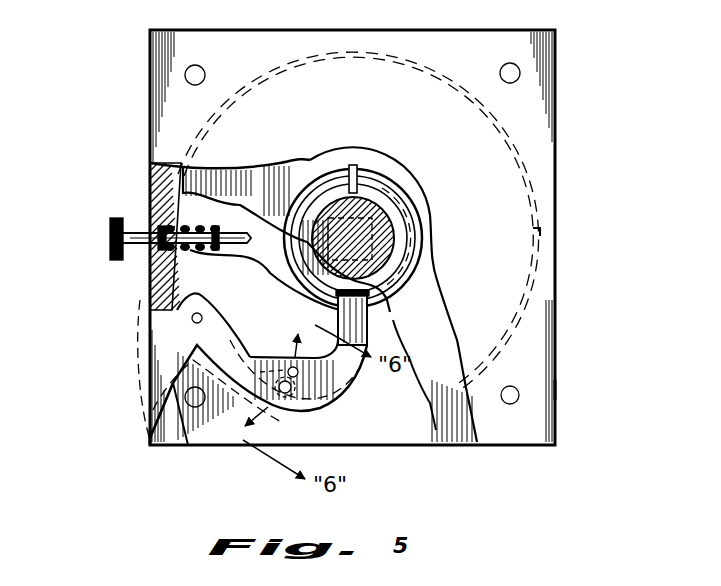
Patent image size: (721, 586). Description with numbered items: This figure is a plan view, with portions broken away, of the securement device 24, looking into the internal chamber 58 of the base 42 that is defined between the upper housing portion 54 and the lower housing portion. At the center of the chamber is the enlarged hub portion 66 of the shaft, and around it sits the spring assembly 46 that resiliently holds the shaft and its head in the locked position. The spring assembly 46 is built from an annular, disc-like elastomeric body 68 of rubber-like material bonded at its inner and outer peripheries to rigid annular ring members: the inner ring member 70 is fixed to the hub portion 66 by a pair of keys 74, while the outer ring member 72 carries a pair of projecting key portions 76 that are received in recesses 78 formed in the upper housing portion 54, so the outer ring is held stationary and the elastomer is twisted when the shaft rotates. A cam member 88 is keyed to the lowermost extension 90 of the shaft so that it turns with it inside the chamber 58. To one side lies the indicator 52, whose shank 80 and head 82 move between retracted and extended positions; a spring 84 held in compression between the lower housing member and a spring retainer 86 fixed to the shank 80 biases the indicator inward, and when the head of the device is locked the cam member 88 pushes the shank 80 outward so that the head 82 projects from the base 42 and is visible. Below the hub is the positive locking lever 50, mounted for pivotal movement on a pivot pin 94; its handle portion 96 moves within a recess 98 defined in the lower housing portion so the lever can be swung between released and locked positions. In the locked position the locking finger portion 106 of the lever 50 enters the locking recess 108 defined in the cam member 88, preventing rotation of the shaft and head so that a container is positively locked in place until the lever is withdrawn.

The securement device 24 is at (126, 79).
The base 42 is at (558, 390).
The spring assembly 46 is at (463, 383).
The positive locking lever 50 is at (163, 442).
The indicator 52 is at (135, 243).
The upper housing portion 54 is at (557, 103).
The internal chamber 58 is at (407, 403).
The hub portion 66 is at (398, 224).
The elastomeric body 68 is at (238, 185).
The inner ring member 70 is at (342, 178).
The outer ring member 72 is at (228, 180).
The keys 74 is at (360, 175).
The projecting key portions 76 is at (538, 232).
The recesses 78 is at (540, 255).
The shank 80 is at (137, 228).
The indicator head 82 is at (110, 230).
The spring 84 is at (177, 256).
The spring retainer 86 is at (178, 280).
The cam member 88 is at (300, 263).
The lowermost extension of shaft 90 is at (398, 190).
The pivot pin 94 is at (187, 318).
The handle portion 96 is at (150, 428).
The recess 98 is at (180, 445).
The locking finger portion 106 is at (372, 312).
The locking recess 108 is at (338, 310).